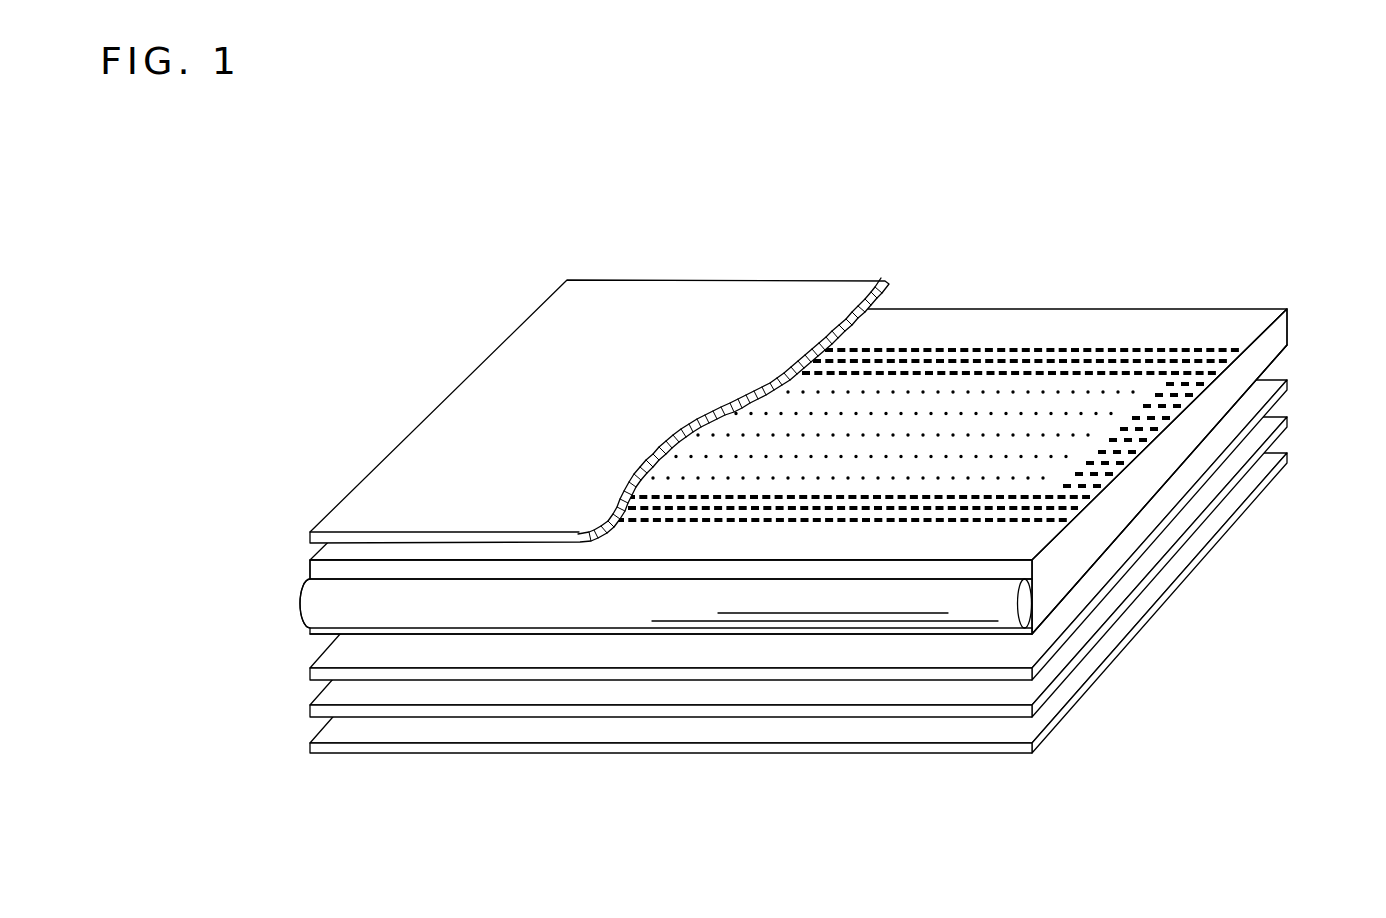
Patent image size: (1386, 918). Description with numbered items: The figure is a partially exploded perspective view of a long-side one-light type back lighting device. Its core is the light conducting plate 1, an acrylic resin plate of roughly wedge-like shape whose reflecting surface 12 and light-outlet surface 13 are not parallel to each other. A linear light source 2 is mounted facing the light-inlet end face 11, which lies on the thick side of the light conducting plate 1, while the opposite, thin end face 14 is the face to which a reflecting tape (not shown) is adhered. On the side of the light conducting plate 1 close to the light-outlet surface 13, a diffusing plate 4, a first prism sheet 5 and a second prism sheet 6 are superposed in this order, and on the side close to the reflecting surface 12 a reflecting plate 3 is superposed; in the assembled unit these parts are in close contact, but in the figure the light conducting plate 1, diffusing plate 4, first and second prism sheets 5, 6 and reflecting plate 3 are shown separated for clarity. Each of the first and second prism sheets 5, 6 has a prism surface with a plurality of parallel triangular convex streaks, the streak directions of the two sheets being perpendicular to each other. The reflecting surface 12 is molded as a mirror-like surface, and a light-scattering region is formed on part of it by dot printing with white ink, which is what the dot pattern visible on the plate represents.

The light conducting plate 1 is at (985, 286).
The linear light source 2 is at (313, 604).
The reflecting plate 3 is at (673, 286).
The diffusing plate 4 is at (320, 675).
The first prism sheet 5 is at (320, 710).
The second prism sheet 6 is at (368, 754).
The light-inlet end face 11 is at (327, 569).
The reflecting surface 12 is at (1090, 320).
The light-outlet surface 13 is at (1277, 358).
The thin end face 14 is at (1288, 325).